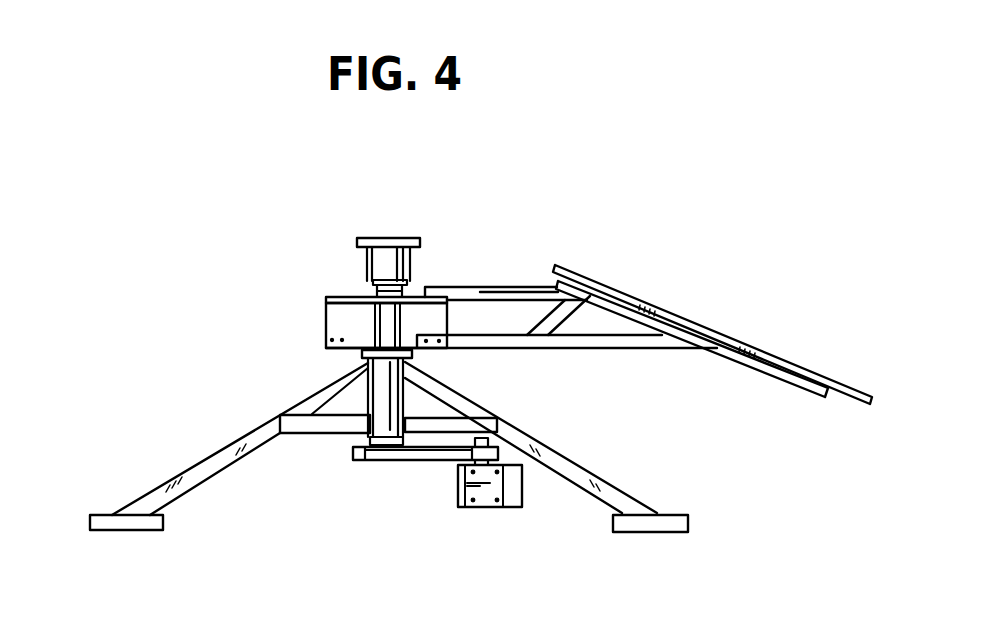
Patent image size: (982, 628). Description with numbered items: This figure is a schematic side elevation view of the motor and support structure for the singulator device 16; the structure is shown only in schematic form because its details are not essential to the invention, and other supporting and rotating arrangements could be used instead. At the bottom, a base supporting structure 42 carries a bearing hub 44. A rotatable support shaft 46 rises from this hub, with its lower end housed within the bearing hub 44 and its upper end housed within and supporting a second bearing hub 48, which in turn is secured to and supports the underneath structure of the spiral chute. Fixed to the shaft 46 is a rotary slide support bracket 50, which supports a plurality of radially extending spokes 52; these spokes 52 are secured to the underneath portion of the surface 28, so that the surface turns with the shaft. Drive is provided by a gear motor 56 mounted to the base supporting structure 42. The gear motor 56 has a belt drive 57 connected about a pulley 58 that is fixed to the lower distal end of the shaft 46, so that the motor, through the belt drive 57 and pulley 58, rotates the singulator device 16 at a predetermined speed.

The singulator device 16 is at (200, 226).
The surface 28 is at (755, 347).
The base supporting structure 42 is at (168, 480).
The bearing hub 44 is at (368, 392).
The rotatable support shaft 46 is at (372, 326).
The bearing hub 48 is at (415, 263).
The rotary slide support bracket 50 is at (327, 302).
The radially extending spokes 52 is at (657, 350).
The gear motor 56 is at (483, 507).
The belt drive 57 is at (430, 462).
The pulley 58 is at (380, 462).